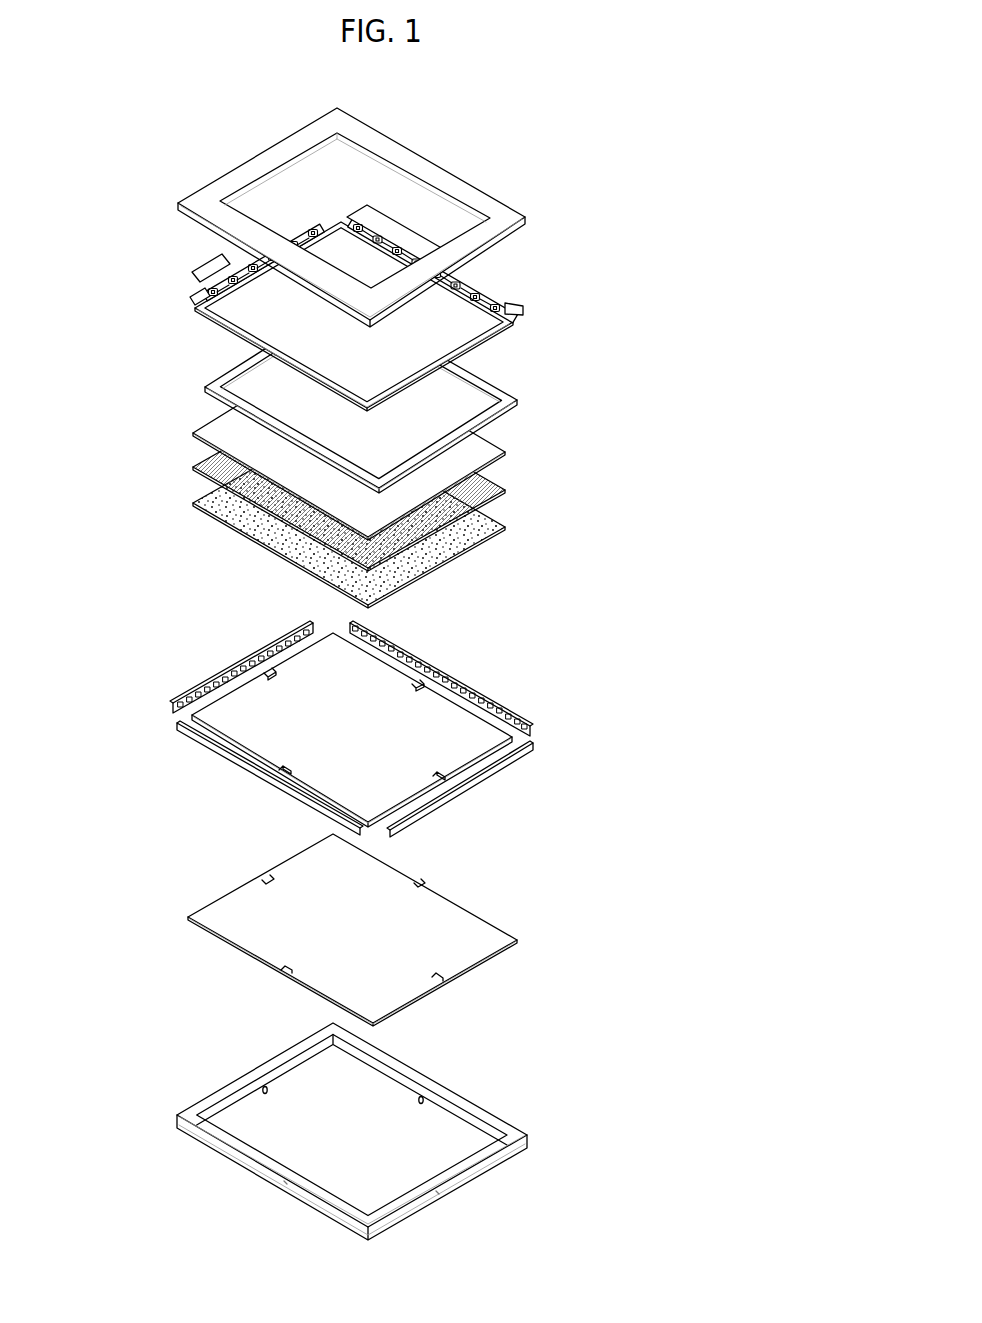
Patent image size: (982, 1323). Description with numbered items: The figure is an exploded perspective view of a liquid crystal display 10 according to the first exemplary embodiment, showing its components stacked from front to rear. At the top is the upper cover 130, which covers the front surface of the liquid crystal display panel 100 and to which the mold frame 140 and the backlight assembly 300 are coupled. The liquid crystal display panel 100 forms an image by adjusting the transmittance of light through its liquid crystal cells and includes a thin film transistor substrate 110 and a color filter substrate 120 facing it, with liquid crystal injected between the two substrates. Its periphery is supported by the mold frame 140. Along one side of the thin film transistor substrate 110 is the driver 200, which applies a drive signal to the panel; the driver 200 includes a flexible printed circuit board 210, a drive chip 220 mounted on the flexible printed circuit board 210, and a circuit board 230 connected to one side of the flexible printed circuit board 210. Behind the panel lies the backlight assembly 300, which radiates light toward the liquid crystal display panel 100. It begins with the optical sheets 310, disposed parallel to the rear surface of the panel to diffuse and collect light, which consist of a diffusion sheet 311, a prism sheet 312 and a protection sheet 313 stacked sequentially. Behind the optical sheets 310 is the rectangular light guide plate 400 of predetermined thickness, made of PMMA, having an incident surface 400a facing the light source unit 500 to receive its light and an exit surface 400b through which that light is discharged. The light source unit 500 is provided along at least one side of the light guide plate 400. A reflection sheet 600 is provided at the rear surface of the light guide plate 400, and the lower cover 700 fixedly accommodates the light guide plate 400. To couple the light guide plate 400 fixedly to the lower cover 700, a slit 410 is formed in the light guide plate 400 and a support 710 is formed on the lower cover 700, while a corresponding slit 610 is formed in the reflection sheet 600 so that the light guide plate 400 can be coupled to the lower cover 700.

The liquid crystal display 10 is at (563, 187).
The liquid crystal display panel 100 is at (574, 317).
The thin film transistor substrate 110 is at (498, 339).
The color filter substrate 120 is at (503, 311).
The upper cover 130 is at (527, 228).
The mold frame 140 is at (517, 400).
The driver 200 is at (118, 250).
The flexible printed circuit board 210 is at (207, 292).
The drive chip 220 is at (190, 300).
The circuit board 230 is at (213, 270).
The backlight assembly 300 is at (637, 485).
The optical sheets 310 is at (578, 452).
The diffusion sheet 311 is at (503, 524).
The prism sheet 312 is at (503, 488).
The protection sheet 313 is at (503, 452).
The light guide plate 400 is at (517, 737).
The incident surface 400a is at (490, 757).
The exit surface 400b is at (380, 673).
The slit 410 is at (417, 688).
The light source unit 500 is at (480, 697).
The reflection sheet 600 is at (477, 927).
The slit 610 is at (417, 888).
The lower cover 700 is at (503, 1123).
The support 710 is at (427, 1098).